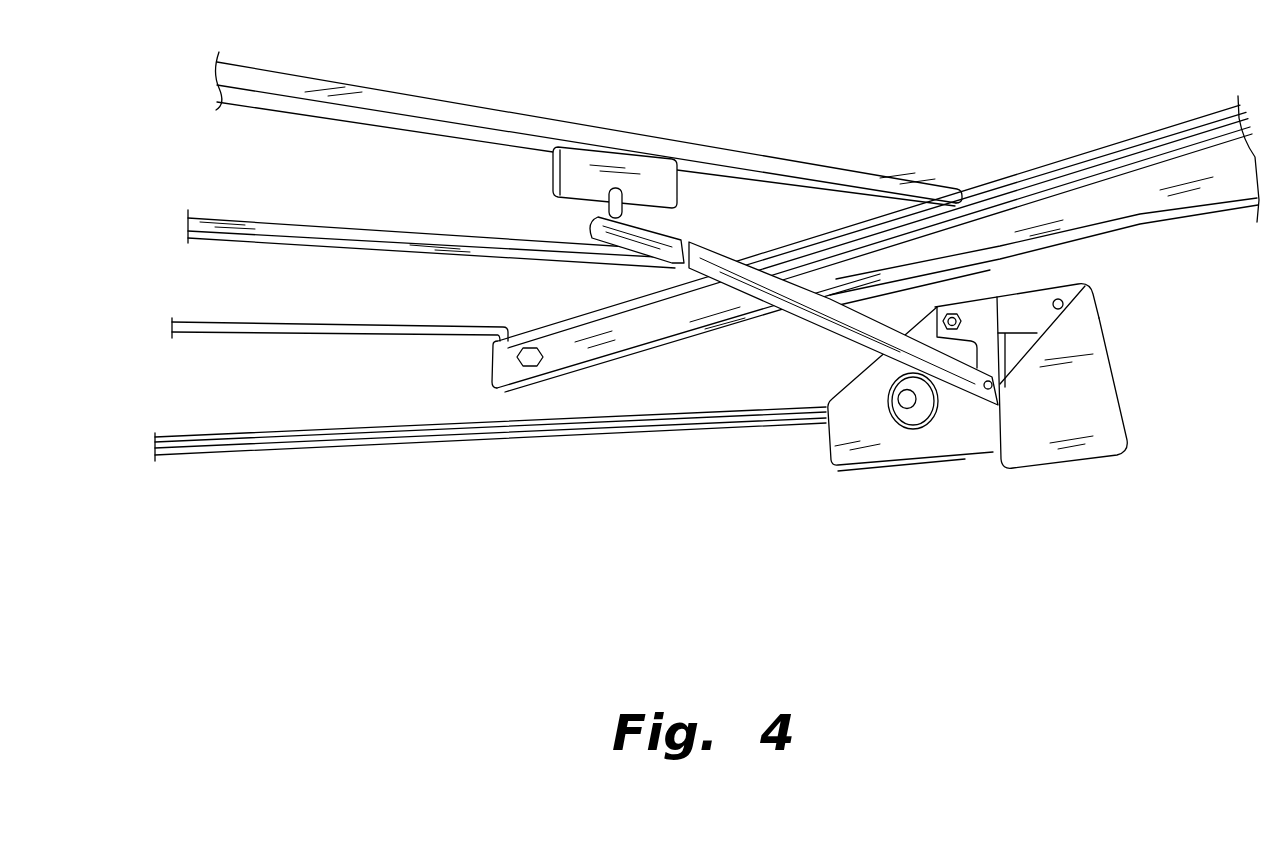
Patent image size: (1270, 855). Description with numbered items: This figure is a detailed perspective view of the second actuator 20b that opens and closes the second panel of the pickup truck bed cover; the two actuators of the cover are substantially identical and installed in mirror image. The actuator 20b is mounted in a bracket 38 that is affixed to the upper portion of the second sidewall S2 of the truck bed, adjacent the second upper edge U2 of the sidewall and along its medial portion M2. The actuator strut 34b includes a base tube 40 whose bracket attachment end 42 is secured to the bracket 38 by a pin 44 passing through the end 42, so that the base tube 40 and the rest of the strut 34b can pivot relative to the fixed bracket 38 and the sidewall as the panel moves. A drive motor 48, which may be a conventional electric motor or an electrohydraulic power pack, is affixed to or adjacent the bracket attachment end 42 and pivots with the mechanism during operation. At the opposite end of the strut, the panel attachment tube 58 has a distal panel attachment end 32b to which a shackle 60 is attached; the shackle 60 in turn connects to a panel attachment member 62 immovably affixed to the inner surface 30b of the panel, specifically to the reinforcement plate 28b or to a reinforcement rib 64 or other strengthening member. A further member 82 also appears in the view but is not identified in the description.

The reinforcement rib 64 is at (347, 123).
The reinforcement plate 28b is at (455, 194).
The panel attachment member 62 is at (551, 181).
The shackle 60 is at (628, 187).
The panel attachment tube 58 is at (672, 230).
The panel attachment end 32b is at (588, 229).
The inner surface of the panel 30b is at (334, 317).
The actuator strut 34b is at (781, 331).
The base tube 40 is at (822, 330).
The pin 44 is at (983, 333).
The second upper edge U2 is at (1094, 227).
The side rail 82 is at (1214, 266).
The second sidewall S2 is at (1226, 353).
The medial portion M2 is at (1144, 413).
The bracket 38 is at (1080, 467).
The bracket attachment end 42 is at (966, 453).
The drive motor 48 is at (907, 430).
The second actuator 20b is at (998, 481).